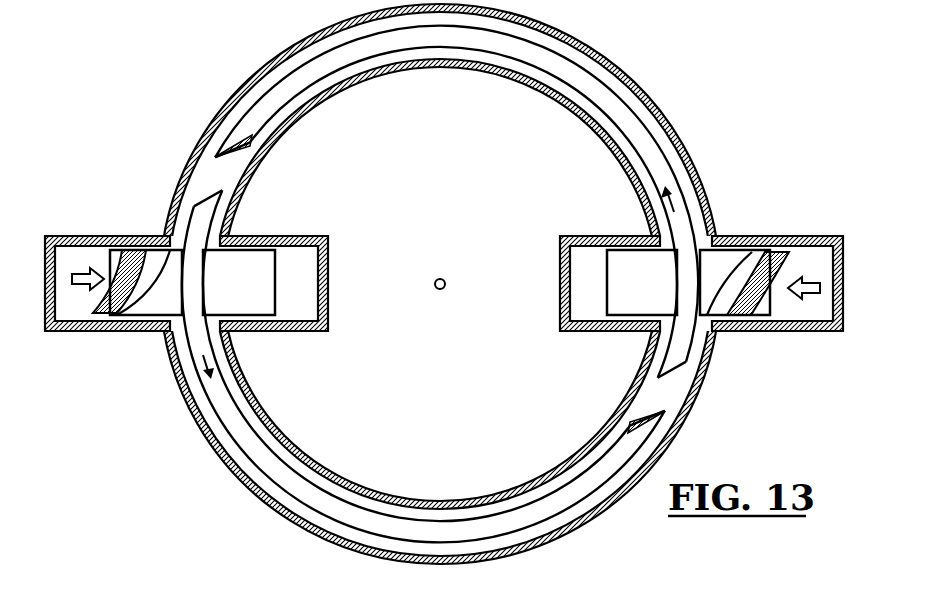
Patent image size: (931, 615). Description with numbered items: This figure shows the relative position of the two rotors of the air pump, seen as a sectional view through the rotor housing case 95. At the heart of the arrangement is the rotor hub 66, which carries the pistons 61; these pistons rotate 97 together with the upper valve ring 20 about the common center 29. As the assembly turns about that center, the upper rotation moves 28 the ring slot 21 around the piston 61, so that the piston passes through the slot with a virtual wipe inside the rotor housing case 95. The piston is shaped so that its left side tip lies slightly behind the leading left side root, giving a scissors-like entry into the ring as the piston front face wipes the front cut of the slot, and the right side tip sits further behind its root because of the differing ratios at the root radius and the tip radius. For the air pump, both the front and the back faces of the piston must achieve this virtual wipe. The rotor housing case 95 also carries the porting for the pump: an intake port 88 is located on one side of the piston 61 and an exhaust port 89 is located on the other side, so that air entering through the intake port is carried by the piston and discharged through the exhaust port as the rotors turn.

The upper valve ring 20 is at (225, 430).
The ring slot 21 is at (210, 176).
The movement of the ring slot 28 is at (676, 208).
The center 29 is at (437, 280).
The piston 61 is at (125, 255).
The rotor hub 66 is at (143, 316).
The intake port 88 is at (222, 243).
The exhaust port 89 is at (157, 331).
The rotor housing case 95 is at (278, 510).
The rotation of the pistons 97 is at (803, 275).